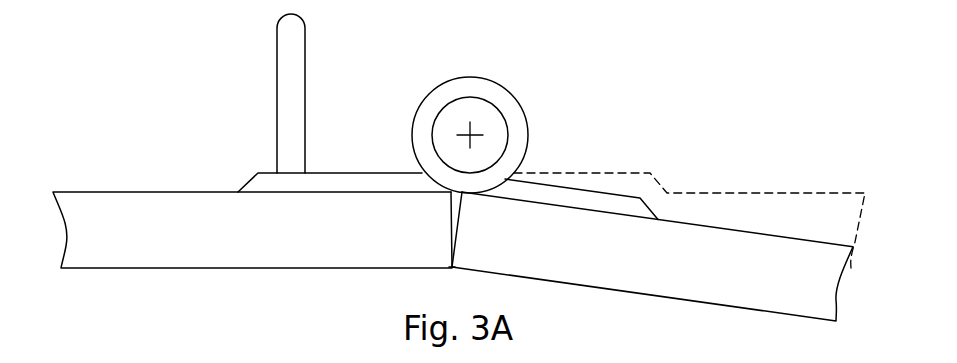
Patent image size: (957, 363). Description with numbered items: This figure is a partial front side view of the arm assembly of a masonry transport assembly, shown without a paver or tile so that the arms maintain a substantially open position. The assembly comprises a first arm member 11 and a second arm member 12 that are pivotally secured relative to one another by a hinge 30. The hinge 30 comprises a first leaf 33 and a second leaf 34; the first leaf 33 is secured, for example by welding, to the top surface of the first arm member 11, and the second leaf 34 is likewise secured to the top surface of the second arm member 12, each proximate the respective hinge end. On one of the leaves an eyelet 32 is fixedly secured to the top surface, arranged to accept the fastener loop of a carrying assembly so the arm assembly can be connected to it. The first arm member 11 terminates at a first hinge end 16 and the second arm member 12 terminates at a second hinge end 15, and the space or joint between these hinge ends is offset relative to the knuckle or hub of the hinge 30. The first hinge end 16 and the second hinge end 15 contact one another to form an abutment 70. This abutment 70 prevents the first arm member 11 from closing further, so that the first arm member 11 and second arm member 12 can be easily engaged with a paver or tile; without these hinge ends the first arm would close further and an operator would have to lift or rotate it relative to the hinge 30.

The first arm member 11 is at (144, 201).
The second arm member 12 is at (760, 244).
The second hinge end 15 is at (473, 210).
The first hinge end 16 is at (435, 210).
The hinge 30 is at (540, 117).
The eyelet 32 is at (263, 47).
The first leaf 33 is at (352, 158).
The second leaf 34 is at (630, 181).
The abutment 70 is at (465, 264).